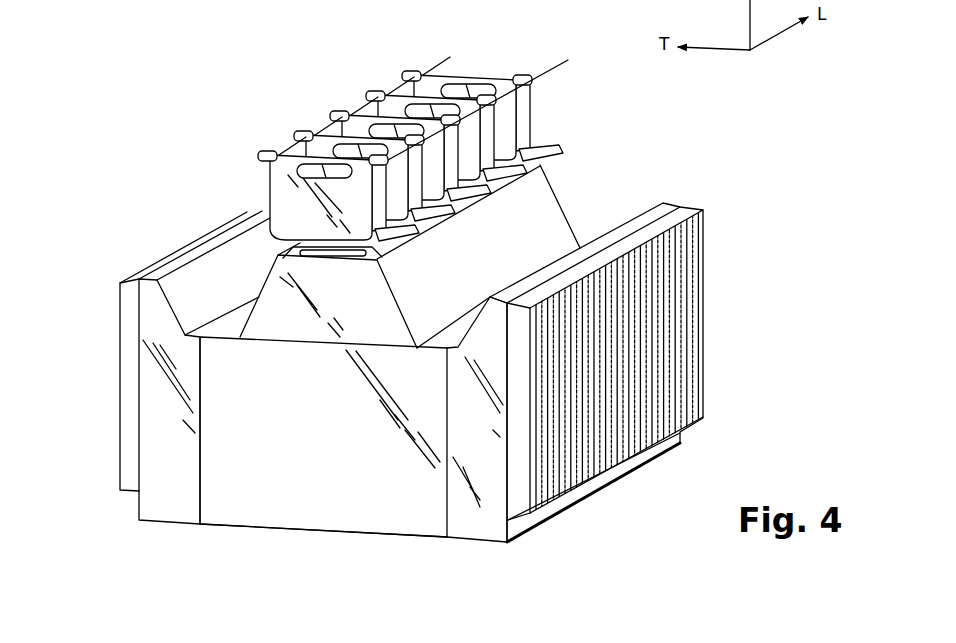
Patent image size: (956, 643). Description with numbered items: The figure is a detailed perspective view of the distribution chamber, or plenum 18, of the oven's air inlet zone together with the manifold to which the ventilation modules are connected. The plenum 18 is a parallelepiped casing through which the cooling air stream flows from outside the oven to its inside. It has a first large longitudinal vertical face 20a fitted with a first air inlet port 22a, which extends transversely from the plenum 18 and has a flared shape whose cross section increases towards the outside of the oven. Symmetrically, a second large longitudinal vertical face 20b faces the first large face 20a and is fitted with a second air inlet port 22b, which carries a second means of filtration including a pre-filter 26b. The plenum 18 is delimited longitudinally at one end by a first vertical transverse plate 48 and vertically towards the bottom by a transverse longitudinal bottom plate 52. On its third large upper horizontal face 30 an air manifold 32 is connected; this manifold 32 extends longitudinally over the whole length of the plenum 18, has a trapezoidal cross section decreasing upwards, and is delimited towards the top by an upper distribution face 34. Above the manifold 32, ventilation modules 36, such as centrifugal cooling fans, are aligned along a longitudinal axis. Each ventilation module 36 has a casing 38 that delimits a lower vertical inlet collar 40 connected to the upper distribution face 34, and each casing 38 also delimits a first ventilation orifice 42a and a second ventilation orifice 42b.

The distribution chamber 18 is at (604, 118).
The first large longitudinal vertical face 20a is at (200, 487).
The second large longitudinal vertical face 20b is at (447, 506).
The first air inlet port 22a is at (87, 413).
The second air inlet port 22b is at (728, 277).
The pre-filter 26b is at (667, 367).
The third large upper horizontal face 30 is at (227, 333).
The air manifold 32 is at (574, 189).
The upper distribution face 34 is at (527, 163).
The ventilation module 36 is at (266, 136).
The casing 38 is at (292, 213).
The lower vertical inlet collar 40 is at (317, 267).
The first ventilation orifice 42a is at (270, 180).
The second ventilation orifice 42b is at (427, 205).
The first vertical transverse plate 48 is at (337, 490).
The bottom plate 52 is at (368, 534).